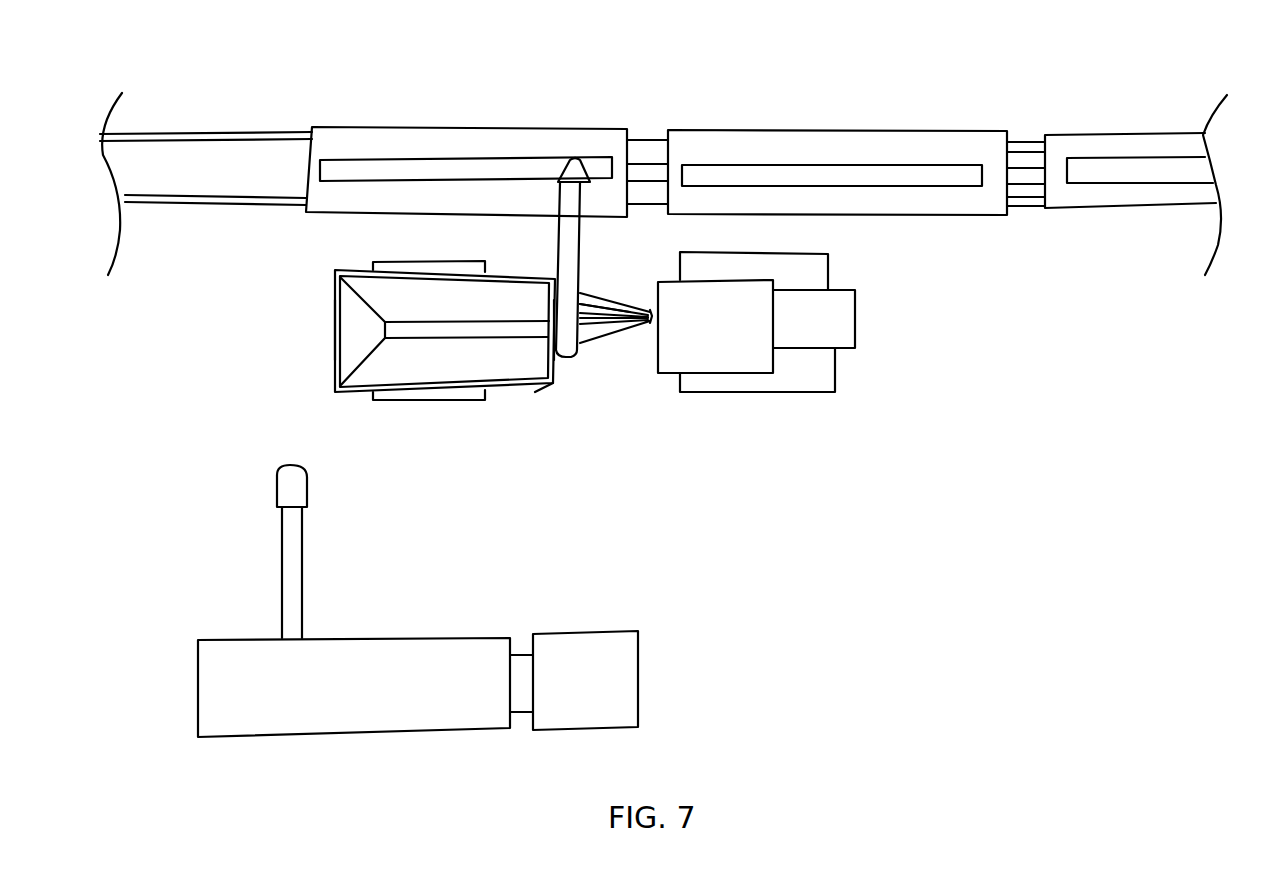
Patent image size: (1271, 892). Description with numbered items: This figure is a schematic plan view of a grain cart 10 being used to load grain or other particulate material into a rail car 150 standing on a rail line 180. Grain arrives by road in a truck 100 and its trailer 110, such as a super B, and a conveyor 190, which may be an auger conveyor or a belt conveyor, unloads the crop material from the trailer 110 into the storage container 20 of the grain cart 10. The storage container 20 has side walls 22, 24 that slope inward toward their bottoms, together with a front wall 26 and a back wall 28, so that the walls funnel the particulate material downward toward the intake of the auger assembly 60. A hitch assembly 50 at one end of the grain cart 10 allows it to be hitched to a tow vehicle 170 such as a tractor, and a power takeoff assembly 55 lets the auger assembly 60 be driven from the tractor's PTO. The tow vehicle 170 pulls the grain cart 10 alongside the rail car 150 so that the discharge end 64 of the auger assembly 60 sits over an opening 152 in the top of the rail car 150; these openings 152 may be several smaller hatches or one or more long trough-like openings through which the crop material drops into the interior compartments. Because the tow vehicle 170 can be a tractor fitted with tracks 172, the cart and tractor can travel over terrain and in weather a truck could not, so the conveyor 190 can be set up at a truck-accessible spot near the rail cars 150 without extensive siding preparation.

The grain cart 10 is at (535, 391).
The storage container 20 is at (444, 386).
The side wall 22 is at (497, 272).
The side wall 24 is at (395, 363).
The front wall 26 is at (557, 372).
The back wall 28 is at (327, 340).
The hitch assembly 50 is at (637, 330).
The power takeoff assembly 55 is at (599, 365).
The auger assembly 60 is at (617, 360).
The discharge end 64 is at (577, 173).
The truck 100 is at (583, 632).
The trailer 110 is at (425, 640).
The rail car 150 is at (500, 126).
The opening 152 is at (418, 173).
The tow vehicle 170 is at (772, 383).
The tracks 172 is at (823, 395).
The rail line 180 is at (253, 134).
The conveyor 190 is at (282, 548).